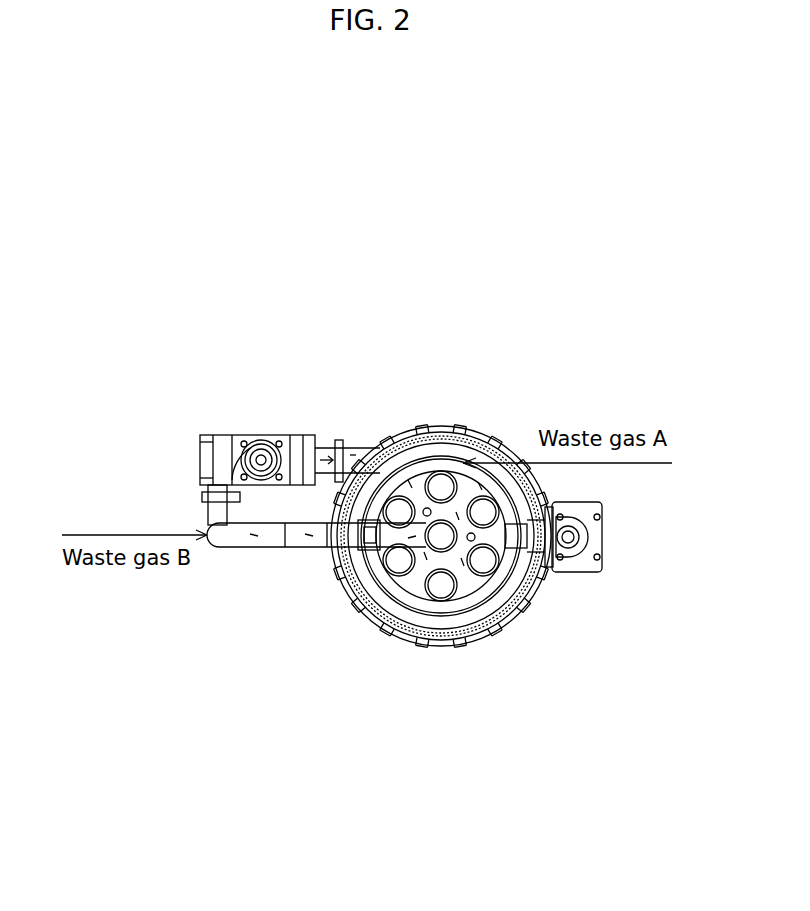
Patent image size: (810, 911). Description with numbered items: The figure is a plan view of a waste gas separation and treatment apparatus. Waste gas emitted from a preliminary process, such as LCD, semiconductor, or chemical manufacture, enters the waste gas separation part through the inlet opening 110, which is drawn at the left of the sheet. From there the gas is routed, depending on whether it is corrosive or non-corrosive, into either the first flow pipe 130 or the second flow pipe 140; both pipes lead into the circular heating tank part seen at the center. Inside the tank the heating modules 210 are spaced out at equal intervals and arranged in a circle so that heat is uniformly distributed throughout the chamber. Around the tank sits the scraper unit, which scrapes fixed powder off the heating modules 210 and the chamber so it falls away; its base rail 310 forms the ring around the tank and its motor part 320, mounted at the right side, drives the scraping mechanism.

The inlet opening 110 is at (259, 452).
The first flow pipe 130 is at (358, 443).
The second flow pipe 140 is at (307, 548).
The heating modules 210 is at (497, 572).
The base rail 310 is at (490, 437).
The motor part 320 is at (575, 572).